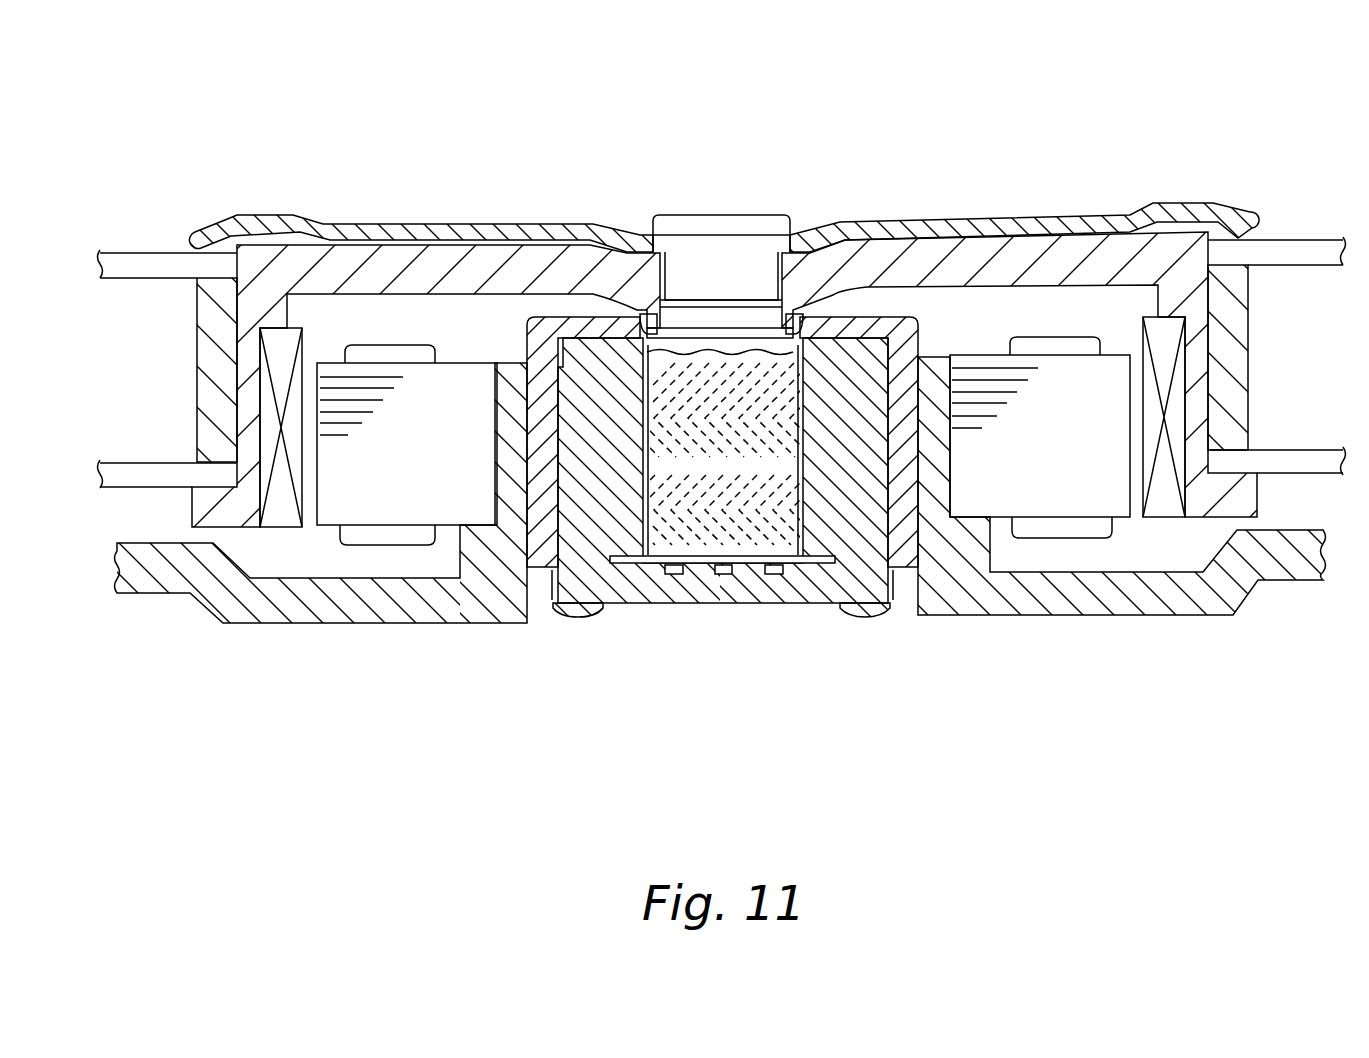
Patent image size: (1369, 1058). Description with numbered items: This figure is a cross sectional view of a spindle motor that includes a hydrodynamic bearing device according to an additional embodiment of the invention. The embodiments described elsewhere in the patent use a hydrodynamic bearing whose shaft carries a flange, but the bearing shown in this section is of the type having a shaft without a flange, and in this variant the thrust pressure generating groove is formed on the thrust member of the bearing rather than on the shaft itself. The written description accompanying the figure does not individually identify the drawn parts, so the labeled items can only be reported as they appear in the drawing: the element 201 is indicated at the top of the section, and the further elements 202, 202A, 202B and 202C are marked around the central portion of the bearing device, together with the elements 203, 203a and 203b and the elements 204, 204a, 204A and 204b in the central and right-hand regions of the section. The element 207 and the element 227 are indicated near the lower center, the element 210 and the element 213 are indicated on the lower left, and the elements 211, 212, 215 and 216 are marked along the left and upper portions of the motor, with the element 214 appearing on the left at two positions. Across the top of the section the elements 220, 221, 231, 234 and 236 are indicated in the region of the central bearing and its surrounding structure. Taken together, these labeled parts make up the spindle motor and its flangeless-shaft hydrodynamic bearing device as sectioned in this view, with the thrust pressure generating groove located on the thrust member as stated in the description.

The electromagnetic assembly 201 is at (702, 280).
The bobbin holder 202 is at (580, 533).
The circuit board 202A is at (770, 563).
The upper coil winding 202B is at (670, 445).
The lower coil winding 202C is at (696, 478).
The right housing 203 is at (960, 290).
The right cover plate 203a is at (905, 300).
The right yoke base 203b is at (920, 470).
The cup-shaped core 204 is at (812, 594).
The inner surface of core 204a is at (745, 483).
The terminals 204A is at (674, 575).
The core foot 204b is at (838, 618).
The holder foot 207 is at (573, 620).
The left yoke base 210 is at (453, 610).
The left housing 211 is at (443, 258).
The coil 212 is at (278, 362).
The coil body 213 is at (383, 507).
The shaft 214 is at (133, 267).
The bearing 215 is at (210, 316).
The left cover plate 216 is at (268, 225).
The plate 220 is at (733, 350).
The tab 221 is at (638, 240).
The foot edge 227 is at (598, 620).
The pin 231 is at (790, 235).
The cap 234 is at (688, 228).
The washer 236 is at (838, 250).